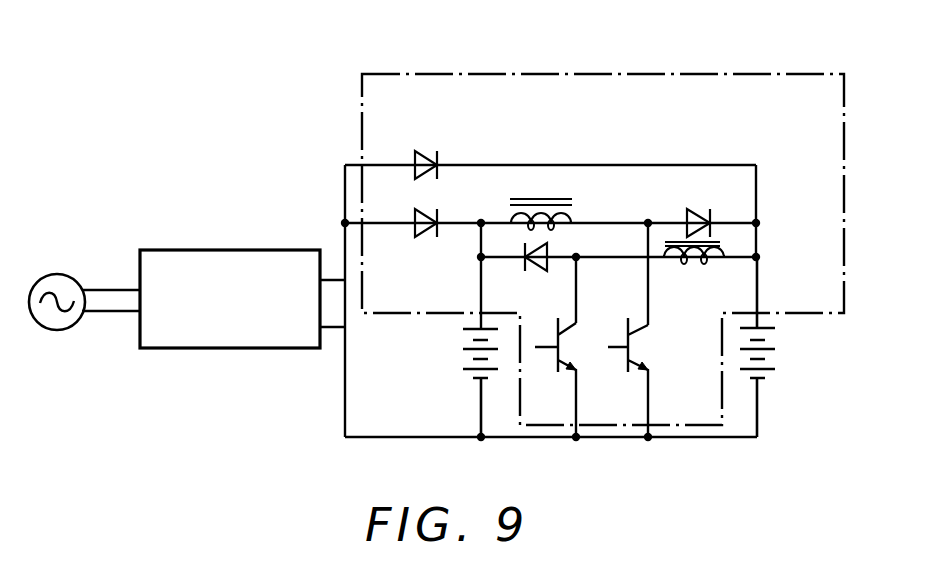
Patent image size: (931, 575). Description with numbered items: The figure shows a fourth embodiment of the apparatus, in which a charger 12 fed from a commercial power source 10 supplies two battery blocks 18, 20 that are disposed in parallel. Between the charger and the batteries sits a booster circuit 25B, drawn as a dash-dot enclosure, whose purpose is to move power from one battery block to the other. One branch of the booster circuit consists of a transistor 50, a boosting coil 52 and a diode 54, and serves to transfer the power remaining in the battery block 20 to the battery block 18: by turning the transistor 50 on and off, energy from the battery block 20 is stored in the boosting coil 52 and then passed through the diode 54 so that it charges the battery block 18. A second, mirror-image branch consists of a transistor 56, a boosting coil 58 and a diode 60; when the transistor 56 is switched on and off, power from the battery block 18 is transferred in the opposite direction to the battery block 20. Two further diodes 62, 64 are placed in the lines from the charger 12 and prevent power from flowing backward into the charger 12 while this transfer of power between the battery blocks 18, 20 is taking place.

The commercial power source 10 is at (64, 272).
The charger 12 is at (222, 250).
The battery block 18 is at (460, 362).
The battery block 20 is at (778, 362).
The booster circuit 25B is at (475, 74).
The transistor 50 is at (548, 358).
The boosting coil 52 is at (688, 268).
The diode 54 is at (543, 270).
The transistor 56 is at (620, 360).
The boosting coil 58 is at (557, 194).
The diode 60 is at (703, 211).
The diode 62 is at (428, 237).
The diode 64 is at (425, 150).